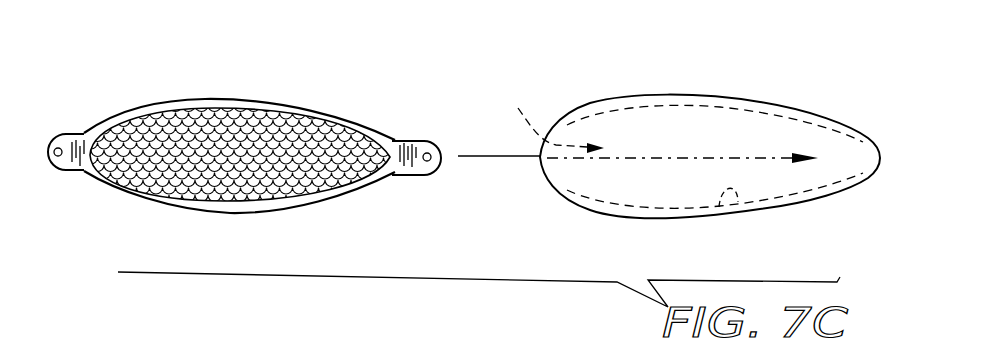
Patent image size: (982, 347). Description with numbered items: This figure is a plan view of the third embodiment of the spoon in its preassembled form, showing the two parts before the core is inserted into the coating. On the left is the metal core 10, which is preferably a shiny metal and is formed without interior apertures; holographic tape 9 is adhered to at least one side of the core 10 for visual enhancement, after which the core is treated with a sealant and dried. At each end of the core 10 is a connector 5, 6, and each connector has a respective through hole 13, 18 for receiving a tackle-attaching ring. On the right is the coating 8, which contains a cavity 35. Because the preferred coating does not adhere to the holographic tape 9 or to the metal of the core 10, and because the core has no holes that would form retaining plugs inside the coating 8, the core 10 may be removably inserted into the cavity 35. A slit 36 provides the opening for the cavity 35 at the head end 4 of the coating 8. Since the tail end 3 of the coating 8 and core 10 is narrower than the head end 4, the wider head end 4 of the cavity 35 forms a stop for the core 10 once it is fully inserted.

The tail end 3 is at (826, 210).
The head end 4 is at (561, 90).
The connector 5 is at (405, 175).
The connector 6 is at (77, 171).
The coating 8 is at (692, 99).
The holographic tape 9 is at (212, 117).
The core 10 is at (278, 110).
The through hole 13 is at (59, 148).
The through hole 18 is at (428, 161).
The cavity 35 is at (720, 188).
The slit 36 is at (549, 121).